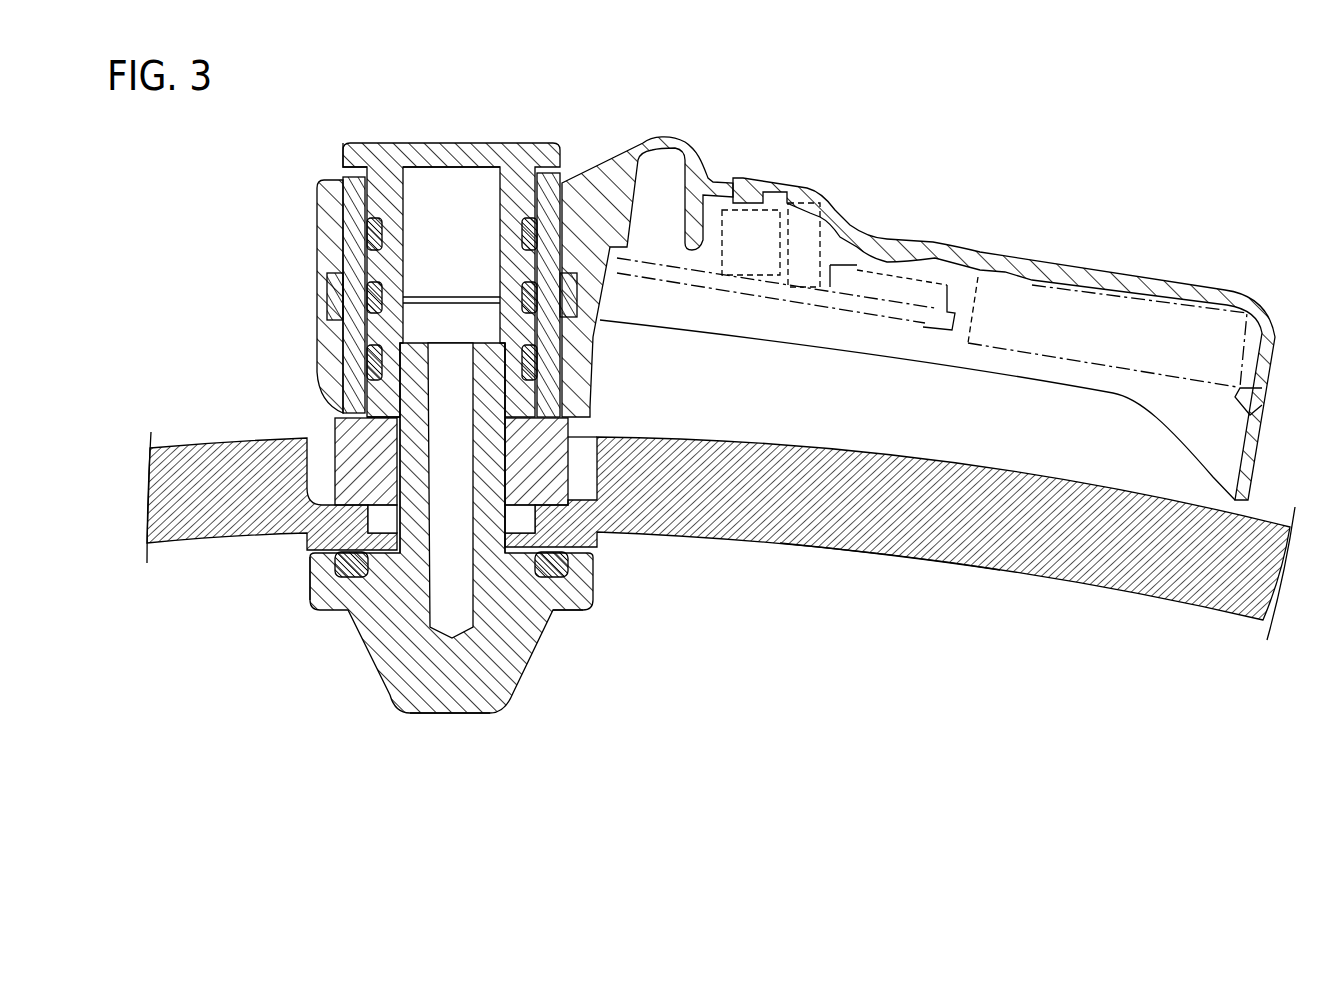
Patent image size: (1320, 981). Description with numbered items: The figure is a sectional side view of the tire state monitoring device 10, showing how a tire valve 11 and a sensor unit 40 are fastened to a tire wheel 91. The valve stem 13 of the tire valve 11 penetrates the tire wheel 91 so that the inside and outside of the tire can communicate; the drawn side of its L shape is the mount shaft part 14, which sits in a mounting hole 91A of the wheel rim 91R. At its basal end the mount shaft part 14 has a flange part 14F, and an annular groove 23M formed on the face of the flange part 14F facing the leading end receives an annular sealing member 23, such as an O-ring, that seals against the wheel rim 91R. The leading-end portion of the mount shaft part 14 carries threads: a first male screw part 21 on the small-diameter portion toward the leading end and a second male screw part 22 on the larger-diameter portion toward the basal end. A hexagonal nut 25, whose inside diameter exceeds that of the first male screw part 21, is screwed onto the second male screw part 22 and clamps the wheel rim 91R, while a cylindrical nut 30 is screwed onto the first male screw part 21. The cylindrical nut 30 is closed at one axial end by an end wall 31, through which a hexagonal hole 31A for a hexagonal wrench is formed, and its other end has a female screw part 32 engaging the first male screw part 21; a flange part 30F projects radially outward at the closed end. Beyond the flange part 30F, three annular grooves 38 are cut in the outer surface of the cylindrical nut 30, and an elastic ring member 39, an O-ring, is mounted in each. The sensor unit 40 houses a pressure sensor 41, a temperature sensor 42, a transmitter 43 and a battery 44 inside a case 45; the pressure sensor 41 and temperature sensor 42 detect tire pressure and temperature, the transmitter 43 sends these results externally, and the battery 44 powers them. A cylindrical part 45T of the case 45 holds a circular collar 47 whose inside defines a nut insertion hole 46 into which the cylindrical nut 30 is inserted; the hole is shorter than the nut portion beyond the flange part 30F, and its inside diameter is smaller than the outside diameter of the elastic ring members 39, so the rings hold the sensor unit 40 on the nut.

The connector 10 is at (1088, 154).
The tire valve 11 is at (515, 725).
The valve stem 13 is at (373, 643).
The mount shaft part 14 is at (480, 443).
The flange part 14F is at (312, 580).
The first male screw part 21 is at (397, 395).
The second male screw part 22 is at (397, 441).
The annular sealing member 23 is at (593, 560).
The annular groove 23M is at (553, 612).
The hexagonal nut 25 is at (343, 470).
The cylindrical nut 30 is at (394, 132).
The flange part 30F is at (351, 160).
The end wall 31 is at (492, 150).
The hexagonal hole 31A is at (468, 162).
The female screw part 32 is at (367, 352).
The annular grooves 38 is at (395, 318).
The elastic ring member 39 is at (330, 278).
The sensor unit 40 is at (949, 232).
The pressure sensor 41 is at (741, 215).
The temperature sensor 42 is at (806, 225).
The transmitter 43 is at (852, 272).
The battery 44 is at (1172, 336).
The case 45 is at (629, 176).
The cylindrical part 45T is at (323, 190).
The nut insertion hole 46 is at (546, 173).
The circular collar 47 is at (343, 207).
The tire wheel 91 is at (1002, 578).
The mounting hole 91A is at (520, 520).
The wheel rim 91R is at (820, 518).